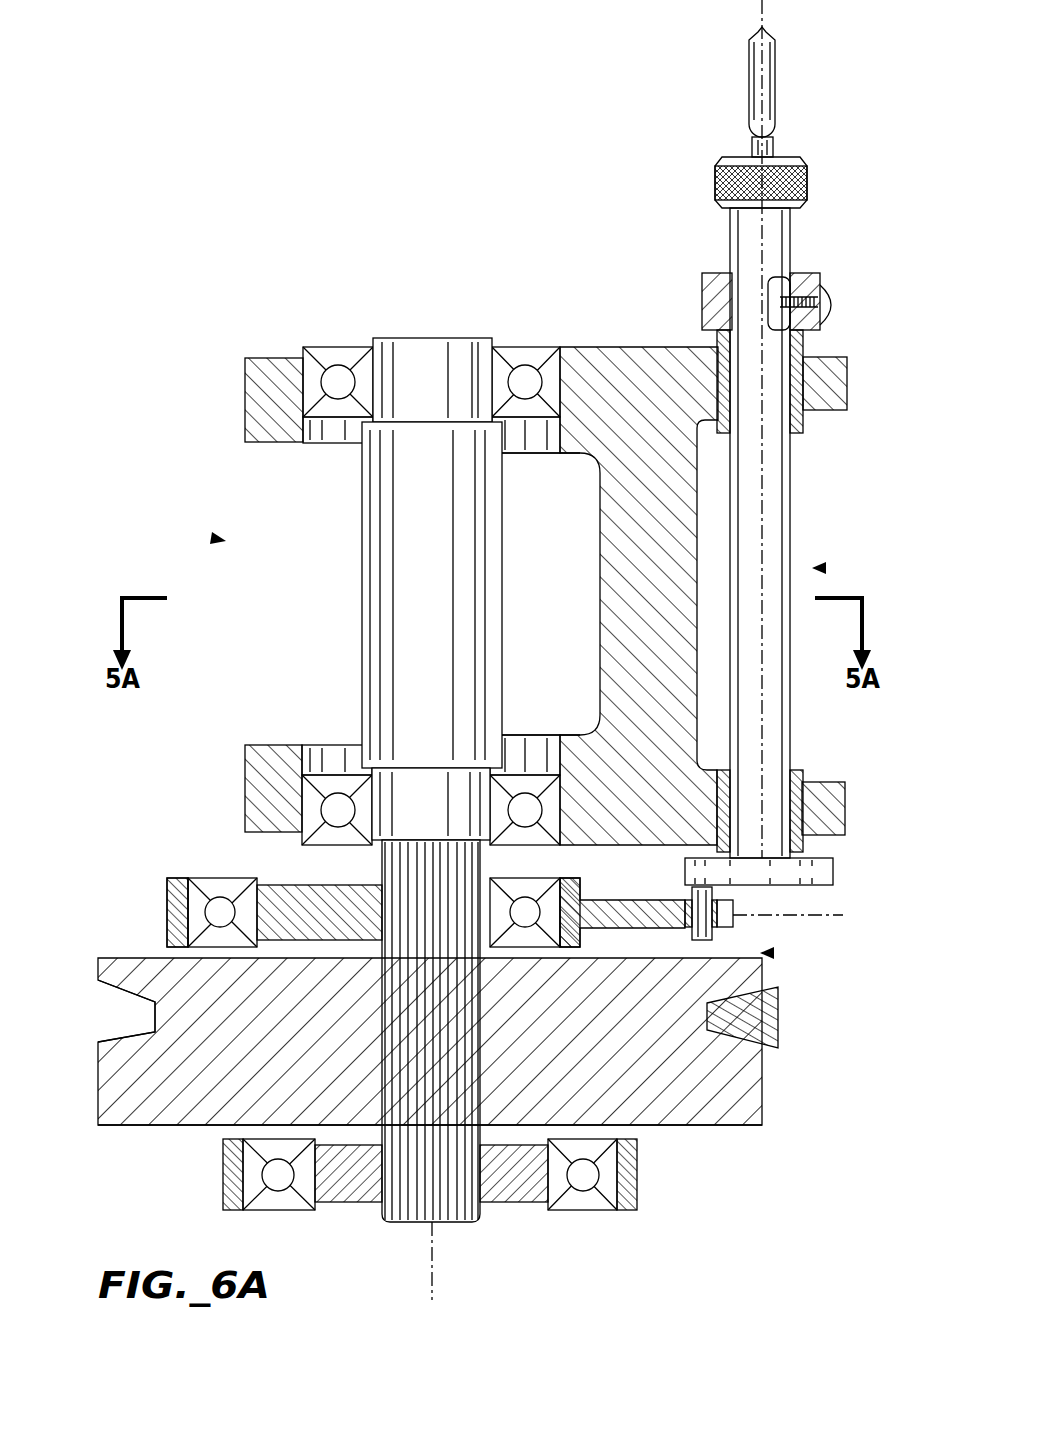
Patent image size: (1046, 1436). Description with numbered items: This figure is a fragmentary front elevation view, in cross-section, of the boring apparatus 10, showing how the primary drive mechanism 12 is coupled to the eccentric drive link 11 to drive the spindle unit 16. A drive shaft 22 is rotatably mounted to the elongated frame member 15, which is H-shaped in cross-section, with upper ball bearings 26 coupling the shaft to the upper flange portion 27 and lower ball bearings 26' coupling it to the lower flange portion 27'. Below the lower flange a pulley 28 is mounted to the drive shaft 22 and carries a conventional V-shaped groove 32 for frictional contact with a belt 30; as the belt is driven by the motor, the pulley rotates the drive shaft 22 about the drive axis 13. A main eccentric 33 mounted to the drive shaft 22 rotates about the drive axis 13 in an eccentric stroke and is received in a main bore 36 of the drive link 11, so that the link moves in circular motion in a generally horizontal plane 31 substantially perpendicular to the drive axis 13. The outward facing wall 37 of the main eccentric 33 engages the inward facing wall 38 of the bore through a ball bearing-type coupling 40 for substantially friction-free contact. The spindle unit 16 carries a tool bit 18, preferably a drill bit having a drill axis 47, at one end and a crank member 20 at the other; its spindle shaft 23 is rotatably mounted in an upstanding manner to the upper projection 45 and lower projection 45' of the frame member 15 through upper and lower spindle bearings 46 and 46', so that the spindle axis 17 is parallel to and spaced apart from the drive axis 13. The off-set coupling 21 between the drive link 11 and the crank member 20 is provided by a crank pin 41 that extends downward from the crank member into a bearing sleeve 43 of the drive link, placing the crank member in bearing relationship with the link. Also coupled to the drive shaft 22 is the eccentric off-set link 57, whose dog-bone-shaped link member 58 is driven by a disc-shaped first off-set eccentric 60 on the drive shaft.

The apparatus 10 is at (215, 538).
The eccentric drive link 11 is at (178, 876).
The primary drive mechanism 12 is at (125, 1140).
The drive axis 13 is at (430, 1258).
The frame member 15 is at (624, 347).
The spindle unit 16 is at (820, 567).
The spindle axis 17 is at (762, 535).
The tool bit 18 is at (749, 85).
The crank member 20 is at (835, 870).
The off-set coupling 21 is at (770, 954).
The drive shaft 22 is at (400, 1222).
The spindle shaft 23 is at (792, 482).
The upper ball bearings 26 is at (326, 375).
The lower ball bearings 26' is at (324, 776).
The upper flange portion 27 is at (242, 400).
The lower flange portion 27' is at (253, 770).
The pulley 28 is at (735, 1128).
The belt 30 is at (778, 1015).
The horizontal plane 31 is at (843, 918).
The V-shaped groove 32 is at (118, 1030).
The main eccentric 33 is at (310, 884).
The main bore 36 is at (366, 880).
The outward facing wall 37 is at (197, 912).
The inward facing wall 38 is at (280, 880).
The ball bearing-type coupling 40 is at (175, 958).
The crank pin 41 is at (705, 946).
The bearing sleeve 43 is at (718, 893).
The upper projection 45 is at (860, 383).
The lower projection 45' is at (861, 806).
The upper spindle bearing 46 is at (799, 301).
The lower spindle bearing 46' is at (835, 796).
The drill axis 47 is at (758, 6).
The eccentric off-set link 57 is at (328, 1216).
The link member 58 is at (637, 1170).
The first off-set eccentric 60 is at (520, 1205).